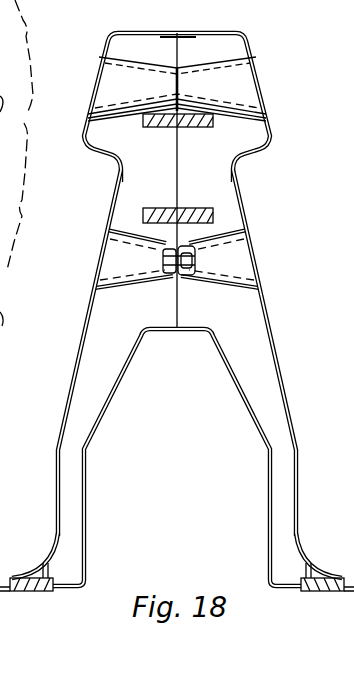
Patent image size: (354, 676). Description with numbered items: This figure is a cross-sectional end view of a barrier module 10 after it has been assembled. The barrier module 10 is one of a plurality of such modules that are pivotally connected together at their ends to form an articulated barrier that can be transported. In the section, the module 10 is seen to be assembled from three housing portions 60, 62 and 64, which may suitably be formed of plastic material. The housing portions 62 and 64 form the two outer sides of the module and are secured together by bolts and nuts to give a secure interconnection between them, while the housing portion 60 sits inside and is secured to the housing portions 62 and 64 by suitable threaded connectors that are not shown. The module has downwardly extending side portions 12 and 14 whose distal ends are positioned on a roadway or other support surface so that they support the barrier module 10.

The barrier module 10 is at (261, 88).
The side portion 12 is at (58, 522).
The side portion 14 is at (298, 536).
The housing portion 60 is at (126, 366).
The housing portion 62 is at (72, 390).
The housing portion 64 is at (270, 333).